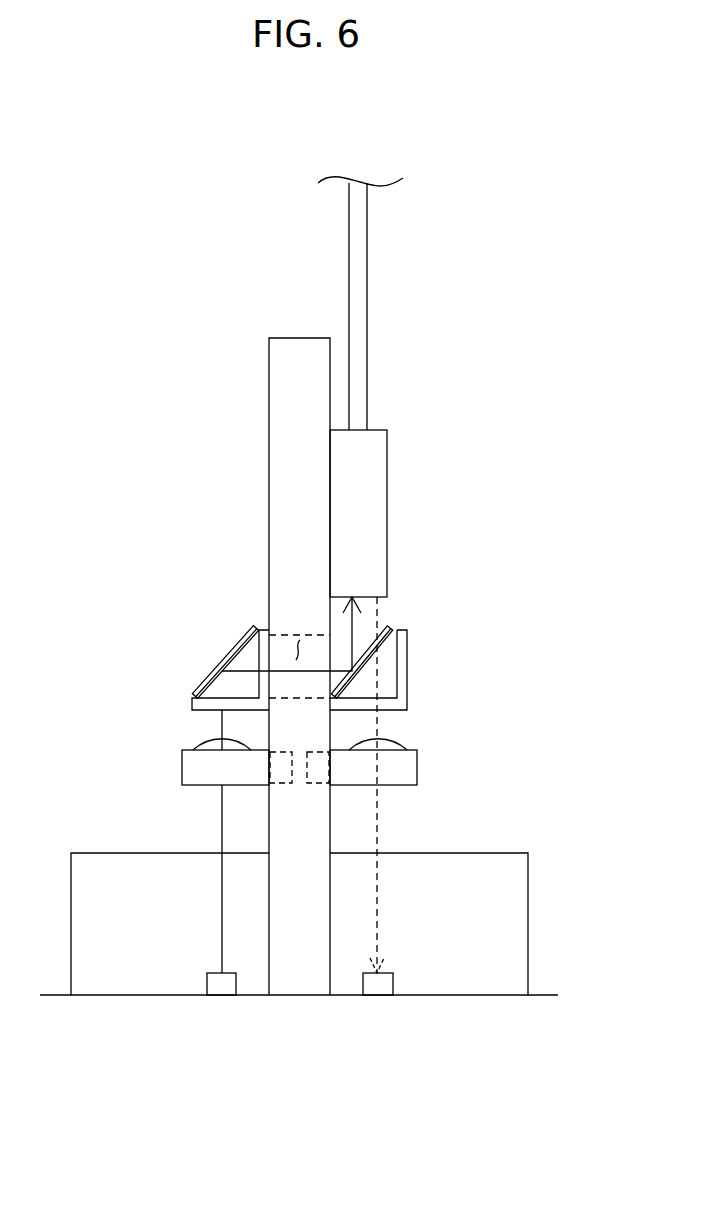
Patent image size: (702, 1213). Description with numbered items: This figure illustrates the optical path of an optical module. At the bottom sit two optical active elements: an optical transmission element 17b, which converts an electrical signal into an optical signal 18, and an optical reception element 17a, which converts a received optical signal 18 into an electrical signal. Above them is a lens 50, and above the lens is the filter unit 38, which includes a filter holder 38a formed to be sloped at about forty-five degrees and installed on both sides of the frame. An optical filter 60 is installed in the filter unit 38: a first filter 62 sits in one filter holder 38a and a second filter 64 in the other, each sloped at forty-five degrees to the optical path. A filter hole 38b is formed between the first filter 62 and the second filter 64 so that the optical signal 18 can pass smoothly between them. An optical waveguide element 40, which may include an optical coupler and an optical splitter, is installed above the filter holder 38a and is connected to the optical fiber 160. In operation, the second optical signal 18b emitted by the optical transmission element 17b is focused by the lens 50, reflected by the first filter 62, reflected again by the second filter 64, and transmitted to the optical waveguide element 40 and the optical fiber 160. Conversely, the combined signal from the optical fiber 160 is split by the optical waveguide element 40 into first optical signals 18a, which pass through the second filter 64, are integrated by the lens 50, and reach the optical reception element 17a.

The optical fiber 160 is at (367, 281).
The optical waveguide element 40 is at (387, 495).
The filter unit 38 is at (320, 606).
The filter holder 38a is at (192, 704).
The filter hole 38b is at (296, 652).
The optical filter 60 is at (368, 624).
The first filter 62 is at (253, 625).
The second filter 64 is at (393, 625).
The lens 50 is at (417, 765).
The optical signal 18 is at (303, 870).
The first optical signal 18a is at (377, 932).
The second optical signal 18b is at (222, 940).
The optical reception element 17a is at (380, 983).
The optical transmission element 17b is at (217, 983).